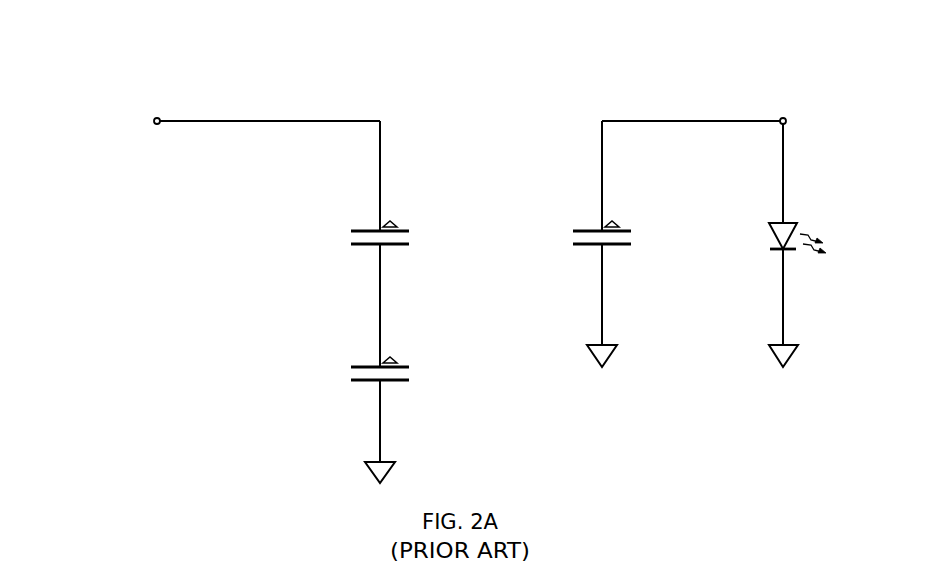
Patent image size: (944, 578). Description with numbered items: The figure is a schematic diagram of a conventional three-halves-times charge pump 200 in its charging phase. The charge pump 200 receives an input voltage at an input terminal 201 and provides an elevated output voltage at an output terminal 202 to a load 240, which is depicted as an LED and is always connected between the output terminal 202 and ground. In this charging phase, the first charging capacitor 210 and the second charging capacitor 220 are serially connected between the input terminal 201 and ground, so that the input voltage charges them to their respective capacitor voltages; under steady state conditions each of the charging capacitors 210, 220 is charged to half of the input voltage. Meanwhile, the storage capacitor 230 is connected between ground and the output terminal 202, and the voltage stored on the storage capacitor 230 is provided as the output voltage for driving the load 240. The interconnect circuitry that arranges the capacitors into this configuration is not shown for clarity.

The charge pump 200 is at (82, 58).
The input terminal 201 is at (157, 118).
The output terminal 202 is at (783, 118).
The charging capacitor 210 is at (372, 235).
The charging capacitor 220 is at (372, 371).
The storage capacitor 230 is at (595, 235).
The load 240 is at (769, 238).